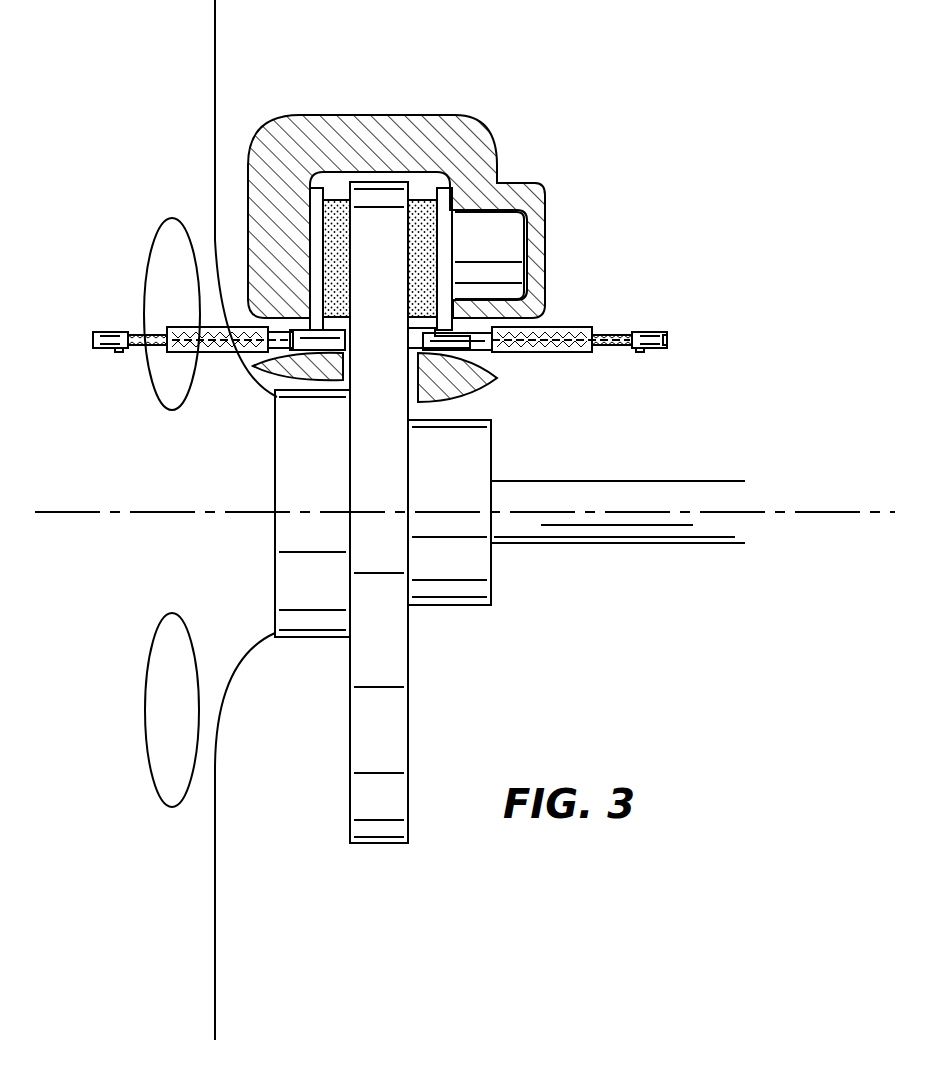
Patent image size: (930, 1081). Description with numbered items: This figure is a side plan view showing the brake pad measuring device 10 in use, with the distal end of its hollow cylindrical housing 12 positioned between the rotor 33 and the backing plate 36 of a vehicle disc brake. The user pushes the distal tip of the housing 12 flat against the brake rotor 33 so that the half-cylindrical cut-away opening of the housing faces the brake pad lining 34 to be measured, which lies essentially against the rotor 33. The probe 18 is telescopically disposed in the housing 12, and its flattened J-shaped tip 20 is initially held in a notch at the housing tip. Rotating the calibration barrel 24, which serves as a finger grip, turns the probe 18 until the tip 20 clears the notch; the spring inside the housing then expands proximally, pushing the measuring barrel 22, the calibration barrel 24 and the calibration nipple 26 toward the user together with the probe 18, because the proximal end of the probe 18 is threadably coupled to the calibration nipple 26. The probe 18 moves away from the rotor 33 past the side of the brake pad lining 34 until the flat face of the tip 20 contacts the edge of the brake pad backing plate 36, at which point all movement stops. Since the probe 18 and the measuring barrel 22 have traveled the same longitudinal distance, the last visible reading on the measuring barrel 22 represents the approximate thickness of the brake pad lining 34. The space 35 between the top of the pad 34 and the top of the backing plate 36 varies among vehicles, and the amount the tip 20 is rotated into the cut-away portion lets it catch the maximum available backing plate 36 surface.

The device 10 is at (583, 334).
The housing 12 is at (538, 218).
The probe 18 is at (540, 337).
The distal tip of probe 20 is at (430, 330).
The measuring barrel 22 is at (617, 333).
The calibration barrel 24 is at (653, 353).
The calibration nipple 26 is at (670, 337).
The brake rotor 33 is at (360, 433).
The brake pad lining 34 is at (308, 180).
The space 35 is at (422, 188).
The brake pad backing plate 36 is at (313, 187).